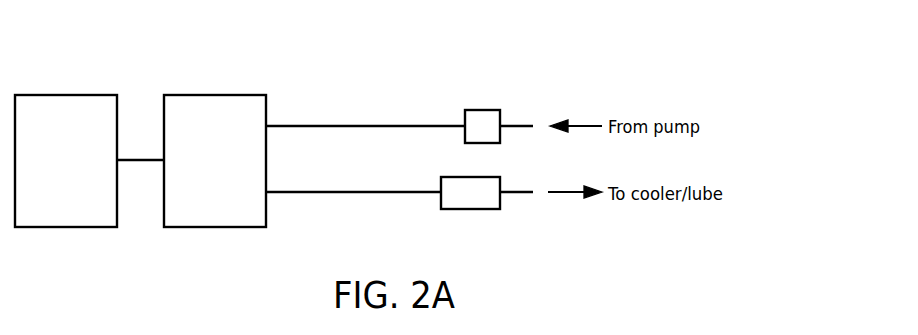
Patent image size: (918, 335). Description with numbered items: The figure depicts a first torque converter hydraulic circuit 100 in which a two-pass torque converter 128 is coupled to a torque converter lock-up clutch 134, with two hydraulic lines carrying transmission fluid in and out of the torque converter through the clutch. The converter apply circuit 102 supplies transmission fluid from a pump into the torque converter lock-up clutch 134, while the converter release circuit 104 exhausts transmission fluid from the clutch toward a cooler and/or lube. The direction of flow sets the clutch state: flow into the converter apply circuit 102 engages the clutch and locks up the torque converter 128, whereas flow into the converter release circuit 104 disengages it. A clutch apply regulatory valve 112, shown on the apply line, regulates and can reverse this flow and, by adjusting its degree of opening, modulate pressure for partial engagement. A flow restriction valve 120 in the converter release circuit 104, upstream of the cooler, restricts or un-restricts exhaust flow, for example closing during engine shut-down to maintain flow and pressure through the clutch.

The torque converter hydraulic circuit 100 is at (687, 44).
The converter apply circuit 102 is at (367, 126).
The converter release circuit 104 is at (367, 192).
The clutch apply regulatory valve 112 is at (475, 110).
The flow restriction valve 120 is at (475, 209).
The two-pass torque converter 128 is at (66, 161).
The torque converter lock-up clutch 134 is at (215, 161).